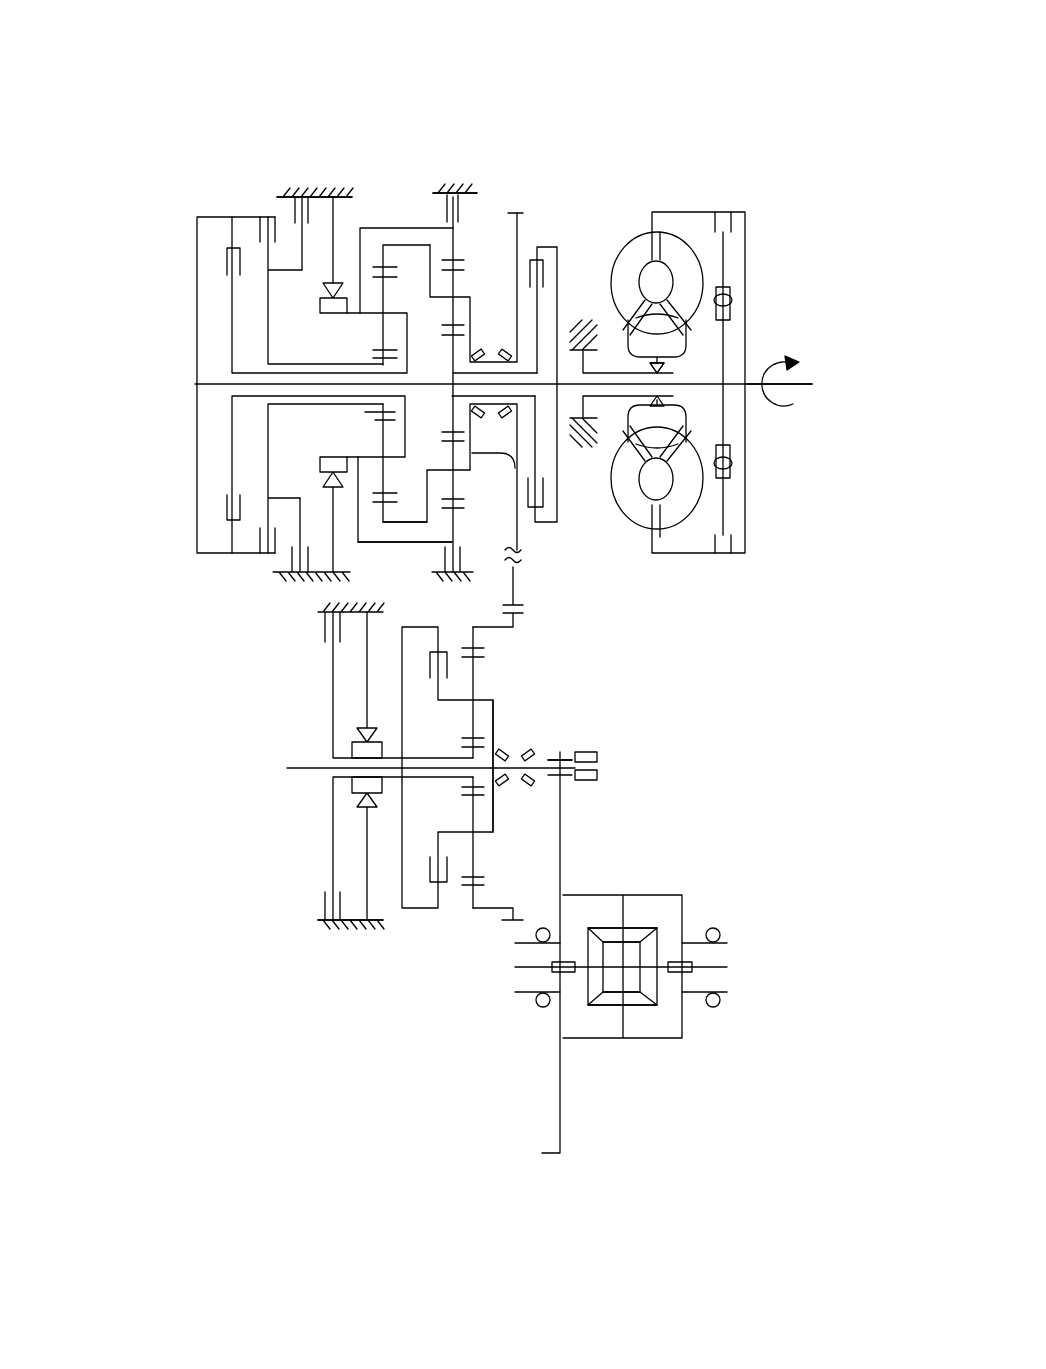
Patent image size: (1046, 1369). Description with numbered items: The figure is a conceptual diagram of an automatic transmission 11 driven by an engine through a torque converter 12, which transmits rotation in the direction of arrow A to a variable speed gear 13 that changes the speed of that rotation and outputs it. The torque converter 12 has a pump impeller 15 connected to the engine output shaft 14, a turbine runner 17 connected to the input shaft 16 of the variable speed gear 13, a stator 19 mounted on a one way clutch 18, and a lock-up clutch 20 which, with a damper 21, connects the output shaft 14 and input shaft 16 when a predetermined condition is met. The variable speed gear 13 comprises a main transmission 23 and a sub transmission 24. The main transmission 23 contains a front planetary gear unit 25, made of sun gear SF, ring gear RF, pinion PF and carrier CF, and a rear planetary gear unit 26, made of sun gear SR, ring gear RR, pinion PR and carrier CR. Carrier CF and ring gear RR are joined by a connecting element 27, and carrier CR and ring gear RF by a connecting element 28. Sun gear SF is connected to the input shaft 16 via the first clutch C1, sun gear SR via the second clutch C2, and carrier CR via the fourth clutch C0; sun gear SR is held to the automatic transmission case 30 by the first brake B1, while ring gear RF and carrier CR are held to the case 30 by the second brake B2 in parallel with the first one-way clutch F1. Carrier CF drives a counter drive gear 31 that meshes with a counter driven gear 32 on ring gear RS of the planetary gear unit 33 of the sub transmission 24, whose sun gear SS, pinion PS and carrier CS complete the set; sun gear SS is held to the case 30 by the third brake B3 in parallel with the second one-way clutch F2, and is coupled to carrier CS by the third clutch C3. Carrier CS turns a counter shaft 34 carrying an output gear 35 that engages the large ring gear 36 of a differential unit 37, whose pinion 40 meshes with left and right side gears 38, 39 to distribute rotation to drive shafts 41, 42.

The automatic transmission 11 is at (560, 78).
The torque converter 12 is at (740, 128).
The variable speed gear 13 is at (388, 95).
The output shaft 14 is at (814, 367).
The pump impeller 15 is at (634, 230).
The input shaft 16 is at (560, 390).
The turbine runner 17 is at (692, 263).
The one way clutch 18 is at (668, 375).
The stator 19 is at (672, 343).
The lock-up clutch 20 is at (748, 540).
The damper 21 is at (729, 470).
The main transmission 23 is at (148, 382).
The sub transmission 24 is at (255, 798).
The front planetary gear unit 25 is at (499, 296).
The rear planetary gear unit 26 is at (414, 275).
The connecting element 27 is at (408, 522).
The connecting element 28 is at (377, 542).
The automatic transmission case 30 is at (335, 195).
The counter drive gear 31 is at (526, 605).
The counter driven gear 32 is at (521, 621).
The planetary gear unit 33 is at (449, 932).
The counter shaft 34 is at (600, 765).
The output gear 35 is at (558, 755).
The large ring gear 36 is at (553, 785).
The differential unit 37 is at (670, 878).
The side gear 38 is at (577, 990).
The side gear 39 is at (650, 982).
The pinion 40 is at (628, 935).
The drive shaft 41 is at (515, 968).
The drive shaft 42 is at (724, 965).
The arrow A is at (789, 391).
The first brake B1 is at (307, 188).
The second brake B2 is at (463, 188).
The third brake B3 is at (324, 636).
The fourth clutch C0 is at (225, 263).
The first clutch C1 is at (545, 275).
The second clutch C2 is at (263, 243).
The third clutch C3 is at (440, 672).
The first one-way clutch F1 is at (336, 303).
The second one-way clutch F2 is at (358, 740).
The sun gear SR is at (378, 412).
The carrier CR is at (383, 426).
The pinion PR is at (388, 497).
The ring gear RR is at (395, 503).
The sun gear SF is at (446, 437).
The pinion PF is at (452, 508).
The ring gear RF is at (458, 512).
The carrier CF is at (517, 483).
The pinion PS is at (484, 652).
The carrier CS is at (495, 712).
The sun gear SS is at (470, 748).
The ring gear RS is at (478, 890).